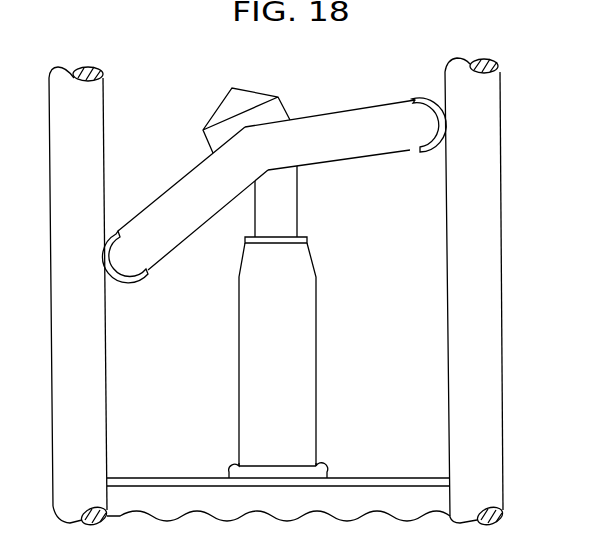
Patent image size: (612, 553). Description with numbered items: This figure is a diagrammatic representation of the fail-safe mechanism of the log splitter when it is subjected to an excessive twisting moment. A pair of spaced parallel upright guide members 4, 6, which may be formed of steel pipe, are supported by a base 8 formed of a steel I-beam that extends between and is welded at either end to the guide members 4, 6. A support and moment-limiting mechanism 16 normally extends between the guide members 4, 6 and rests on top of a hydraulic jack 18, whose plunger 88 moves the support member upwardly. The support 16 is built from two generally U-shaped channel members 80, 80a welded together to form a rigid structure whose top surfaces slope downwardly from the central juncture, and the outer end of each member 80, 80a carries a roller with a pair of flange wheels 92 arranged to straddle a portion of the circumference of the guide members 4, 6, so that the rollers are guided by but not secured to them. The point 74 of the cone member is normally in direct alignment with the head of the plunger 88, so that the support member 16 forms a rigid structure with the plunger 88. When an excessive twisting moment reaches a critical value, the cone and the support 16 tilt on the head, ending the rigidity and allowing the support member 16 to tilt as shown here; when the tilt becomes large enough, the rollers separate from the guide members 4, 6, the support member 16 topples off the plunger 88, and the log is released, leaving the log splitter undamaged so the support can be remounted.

The upright guide member 4 is at (88, 152).
The upright guide member 6 is at (455, 82).
The base 8 is at (373, 493).
The support and moment-limiting mechanism 16 is at (326, 107).
The hydraulic jack 18 is at (298, 300).
The point of the cone member 74 is at (233, 89).
The U-shaped channel member 80 is at (173, 213).
The U-shaped channel member 80a is at (367, 140).
The plunger 88 is at (282, 213).
The flange wheels 92 is at (130, 281).